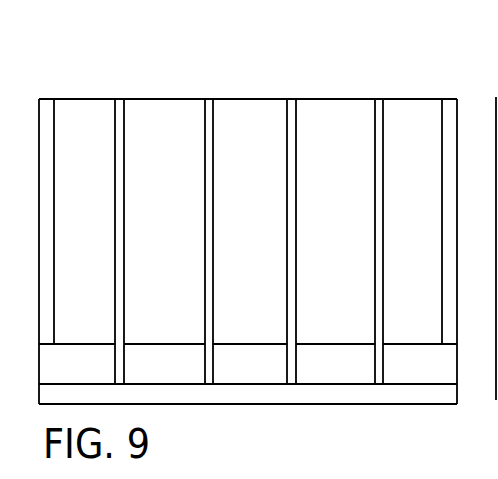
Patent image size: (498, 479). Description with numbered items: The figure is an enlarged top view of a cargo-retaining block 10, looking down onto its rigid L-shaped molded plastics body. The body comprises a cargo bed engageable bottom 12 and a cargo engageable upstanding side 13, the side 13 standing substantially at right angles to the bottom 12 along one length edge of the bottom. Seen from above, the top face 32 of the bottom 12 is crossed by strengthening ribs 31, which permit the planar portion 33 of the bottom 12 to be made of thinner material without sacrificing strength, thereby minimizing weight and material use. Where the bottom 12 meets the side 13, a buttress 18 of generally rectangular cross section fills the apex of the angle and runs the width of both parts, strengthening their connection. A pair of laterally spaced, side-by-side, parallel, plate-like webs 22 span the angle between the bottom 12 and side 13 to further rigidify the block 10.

The block 10 is at (452, 78).
The cargo bed engageable bottom 12 is at (90, 90).
The cargo engageable upstanding side 13 is at (262, 398).
The buttress 18 is at (284, 363).
The webs 22 is at (118, 175).
The strengthening ribs 31 is at (335, 120).
The top face 32 is at (358, 117).
The planar portion 33 is at (248, 117).